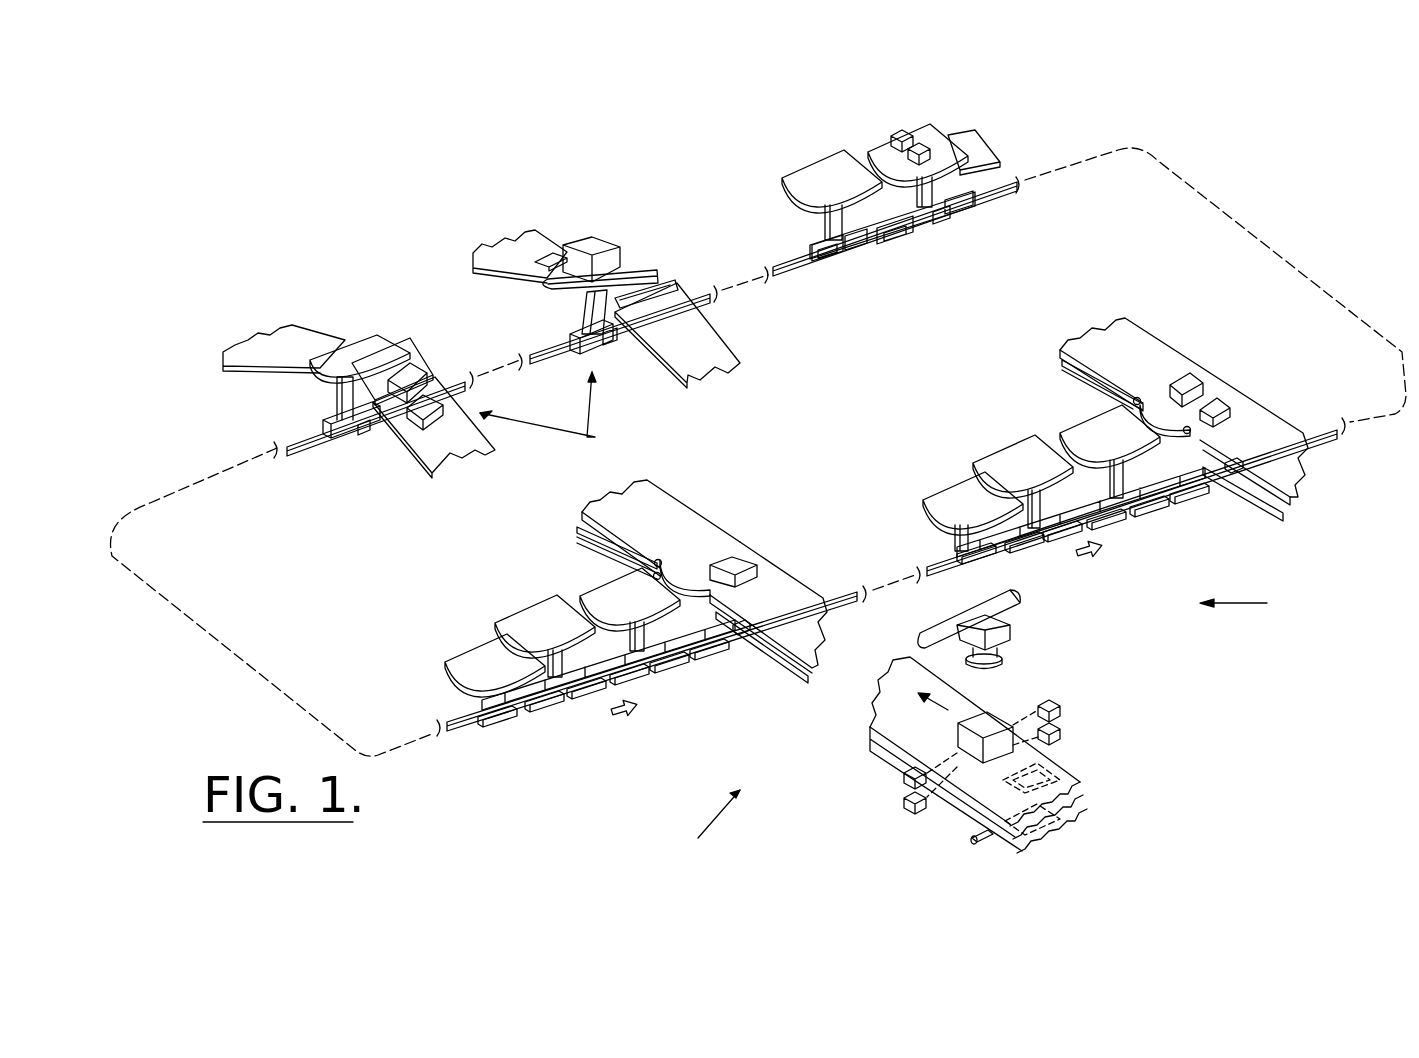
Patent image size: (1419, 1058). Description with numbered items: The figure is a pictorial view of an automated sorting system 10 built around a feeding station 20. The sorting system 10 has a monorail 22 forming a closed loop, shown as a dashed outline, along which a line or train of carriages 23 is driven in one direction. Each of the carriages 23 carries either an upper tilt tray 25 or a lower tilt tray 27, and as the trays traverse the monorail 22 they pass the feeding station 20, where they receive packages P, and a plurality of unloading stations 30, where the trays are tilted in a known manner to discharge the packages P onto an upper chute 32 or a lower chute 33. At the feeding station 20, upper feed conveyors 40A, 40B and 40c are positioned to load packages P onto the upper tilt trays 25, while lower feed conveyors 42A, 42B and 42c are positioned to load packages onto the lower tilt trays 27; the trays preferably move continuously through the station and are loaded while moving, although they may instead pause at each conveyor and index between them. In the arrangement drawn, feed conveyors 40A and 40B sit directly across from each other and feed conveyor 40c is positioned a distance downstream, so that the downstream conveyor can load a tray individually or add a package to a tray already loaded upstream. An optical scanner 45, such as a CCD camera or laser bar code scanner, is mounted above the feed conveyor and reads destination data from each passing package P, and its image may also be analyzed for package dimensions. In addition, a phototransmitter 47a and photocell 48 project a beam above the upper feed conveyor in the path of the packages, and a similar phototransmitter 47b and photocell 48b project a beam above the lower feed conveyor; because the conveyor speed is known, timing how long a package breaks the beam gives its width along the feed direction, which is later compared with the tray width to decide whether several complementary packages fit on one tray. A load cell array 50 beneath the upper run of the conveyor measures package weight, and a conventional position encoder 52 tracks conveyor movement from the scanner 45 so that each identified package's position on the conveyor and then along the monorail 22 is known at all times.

The sorting system 10 is at (1249, 601).
The feeding station 20 is at (699, 823).
The monorail 22 is at (995, 193).
The carriages 23 is at (342, 438).
The upper tilt tray 25 is at (825, 163).
The lower tilt tray 27 is at (1000, 163).
The unloading stations 30 is at (554, 411).
The upper chute 32 is at (280, 360).
The lower chute 33 is at (413, 437).
The upper feed conveyor 40A is at (782, 588).
The upper feed conveyor 40B is at (647, 493).
The upper feed conveyor 40c is at (1273, 430).
The lower feed conveyor 42A is at (790, 663).
The lower feed conveyor 42B is at (578, 522).
The lower feed conveyor 42c is at (1273, 503).
The optical scanner 45 is at (1007, 647).
The phototransmitter 47a is at (907, 775).
The phototransmitter 47b is at (907, 802).
The photocell 48 is at (1057, 705).
The photocell 48b is at (1057, 737).
The load cell array 50 is at (1047, 777).
The position encoder 52 is at (970, 841).
The packages P is at (593, 242).